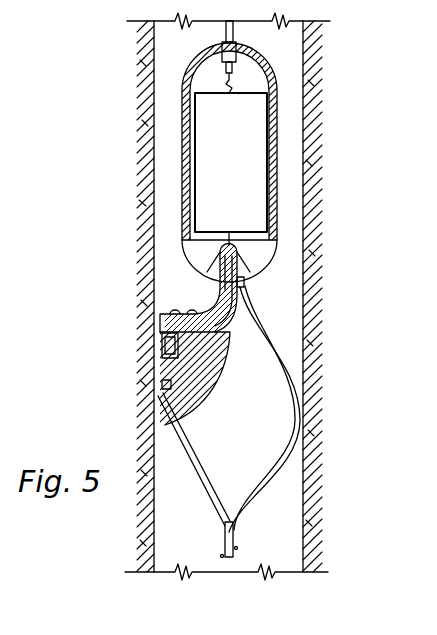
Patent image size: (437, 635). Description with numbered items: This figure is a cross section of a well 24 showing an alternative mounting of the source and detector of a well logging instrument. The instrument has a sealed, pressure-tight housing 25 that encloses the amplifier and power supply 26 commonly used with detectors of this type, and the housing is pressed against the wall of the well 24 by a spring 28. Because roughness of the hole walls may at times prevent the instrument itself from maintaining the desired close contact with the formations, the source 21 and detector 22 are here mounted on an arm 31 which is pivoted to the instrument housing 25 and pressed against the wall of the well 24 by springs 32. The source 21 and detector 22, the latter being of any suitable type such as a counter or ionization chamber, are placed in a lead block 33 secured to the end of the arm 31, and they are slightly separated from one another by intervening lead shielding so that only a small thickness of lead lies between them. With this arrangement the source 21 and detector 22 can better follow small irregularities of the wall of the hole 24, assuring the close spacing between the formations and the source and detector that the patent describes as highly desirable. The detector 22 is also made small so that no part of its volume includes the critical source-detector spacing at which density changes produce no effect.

The source 21 is at (162, 385).
The detector 22 is at (162, 345).
The well 24 is at (153, 59).
The housing 25 is at (182, 110).
The amplifier and power supply 26 is at (262, 193).
The spring 28 is at (165, 296).
The arm 31 is at (160, 308).
The springs 32 is at (198, 464).
The lead block 33 is at (203, 383).